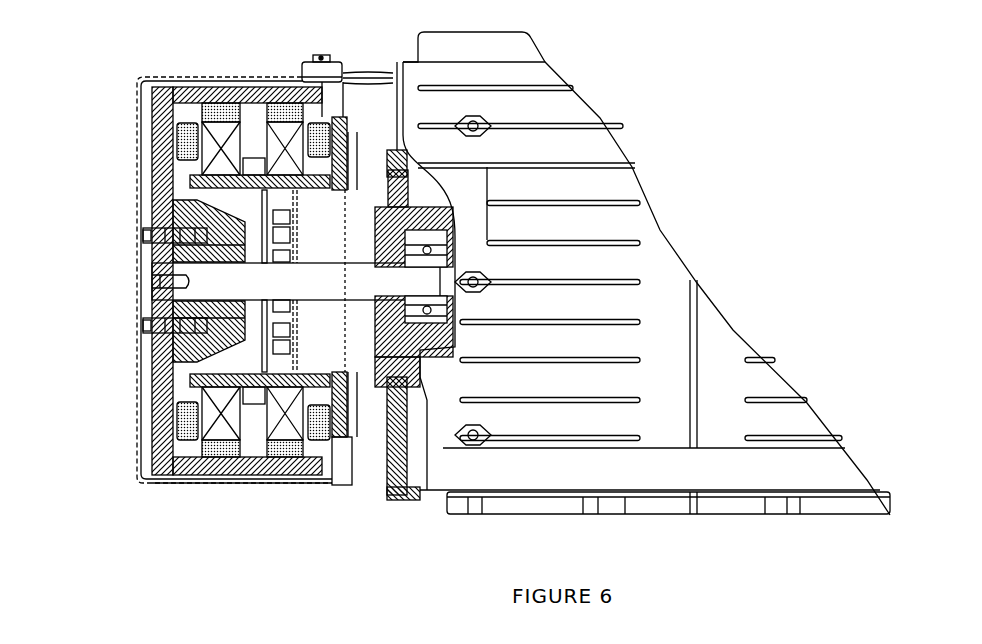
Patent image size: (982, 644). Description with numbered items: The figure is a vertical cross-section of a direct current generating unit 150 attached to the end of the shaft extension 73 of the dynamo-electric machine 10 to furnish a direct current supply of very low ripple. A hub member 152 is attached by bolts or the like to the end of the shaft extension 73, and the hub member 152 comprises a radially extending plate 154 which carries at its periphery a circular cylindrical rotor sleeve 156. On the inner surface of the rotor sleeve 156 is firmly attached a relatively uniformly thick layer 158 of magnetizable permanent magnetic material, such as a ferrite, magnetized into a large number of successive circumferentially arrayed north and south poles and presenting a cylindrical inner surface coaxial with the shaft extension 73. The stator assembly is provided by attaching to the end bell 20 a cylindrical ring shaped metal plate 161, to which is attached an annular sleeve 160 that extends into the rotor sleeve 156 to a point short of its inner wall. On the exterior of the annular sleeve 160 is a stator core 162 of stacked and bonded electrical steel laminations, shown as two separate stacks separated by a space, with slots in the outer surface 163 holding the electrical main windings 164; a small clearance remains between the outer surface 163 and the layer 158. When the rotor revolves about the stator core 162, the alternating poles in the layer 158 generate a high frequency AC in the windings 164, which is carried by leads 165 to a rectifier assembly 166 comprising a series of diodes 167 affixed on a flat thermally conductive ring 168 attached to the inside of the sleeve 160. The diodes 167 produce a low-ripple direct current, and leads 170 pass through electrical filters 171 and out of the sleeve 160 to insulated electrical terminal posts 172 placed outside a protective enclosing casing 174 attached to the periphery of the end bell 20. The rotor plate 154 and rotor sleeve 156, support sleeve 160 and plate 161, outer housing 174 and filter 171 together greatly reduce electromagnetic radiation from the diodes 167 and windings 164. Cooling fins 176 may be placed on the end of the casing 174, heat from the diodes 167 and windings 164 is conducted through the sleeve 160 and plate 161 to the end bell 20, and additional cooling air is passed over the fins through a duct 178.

The machine 10 is at (812, 428).
The end bell 20 is at (403, 477).
The shaft extension 73 is at (275, 281).
The direct current generating unit 150 is at (882, 591).
The hub member 152 is at (213, 337).
The radially extending plate 154 is at (163, 430).
The rotor sleeve 156 is at (267, 462).
The layer of magnetizable permanent magnetic material 158 is at (240, 121).
The annular sleeve 160 is at (262, 165).
The ring shaped metal plate 161 is at (350, 437).
The stator core 162 is at (288, 132).
The outer surface 163 is at (220, 447).
The main windings 164 is at (190, 137).
The leads 165 is at (338, 460).
The rectifier assembly 166 is at (213, 190).
The diodes 167 is at (270, 250).
The thermally conductive ring 168 is at (291, 450).
The leads 170 is at (360, 178).
The electrical filters 171 is at (350, 180).
The insulated electrical terminal posts 172 is at (325, 70).
The protective enclosing casing 174 is at (230, 483).
The cooling fins 176 is at (123, 263).
The duct 178 is at (733, 472).